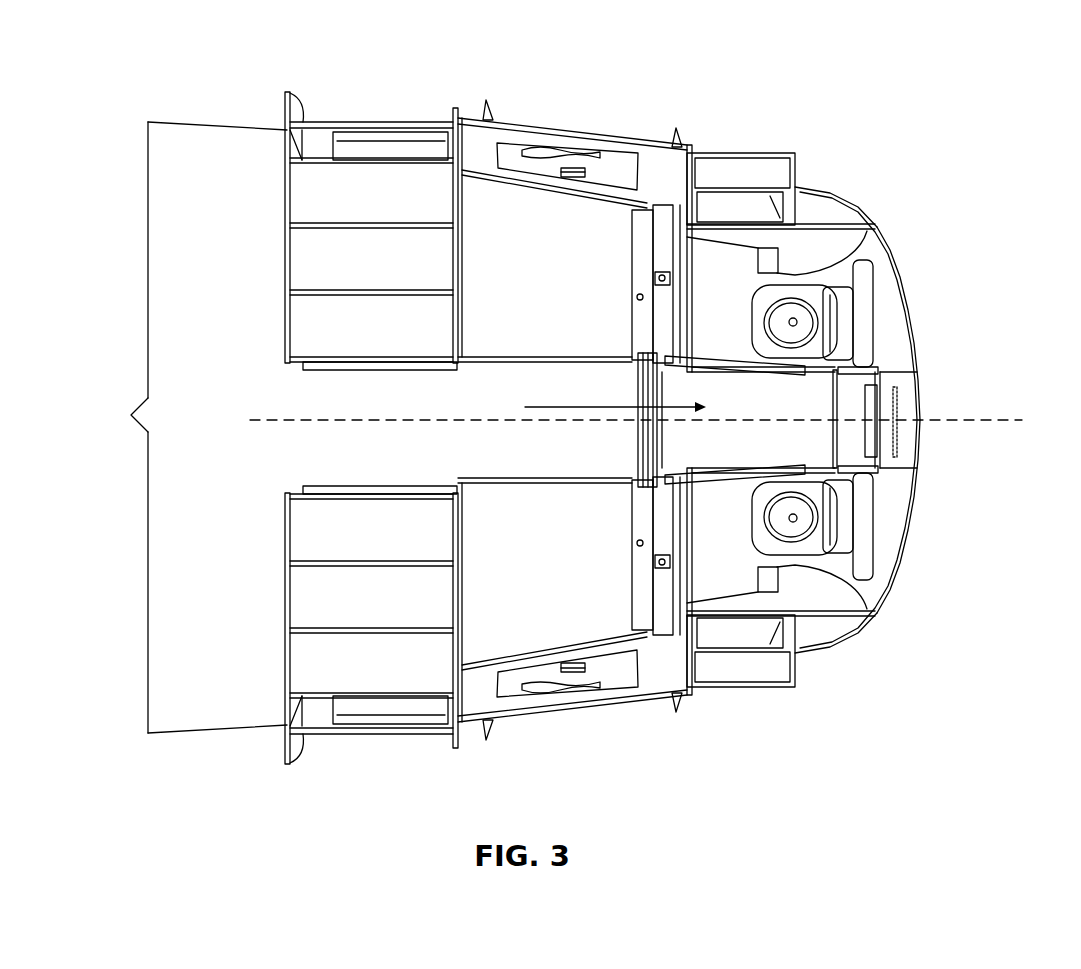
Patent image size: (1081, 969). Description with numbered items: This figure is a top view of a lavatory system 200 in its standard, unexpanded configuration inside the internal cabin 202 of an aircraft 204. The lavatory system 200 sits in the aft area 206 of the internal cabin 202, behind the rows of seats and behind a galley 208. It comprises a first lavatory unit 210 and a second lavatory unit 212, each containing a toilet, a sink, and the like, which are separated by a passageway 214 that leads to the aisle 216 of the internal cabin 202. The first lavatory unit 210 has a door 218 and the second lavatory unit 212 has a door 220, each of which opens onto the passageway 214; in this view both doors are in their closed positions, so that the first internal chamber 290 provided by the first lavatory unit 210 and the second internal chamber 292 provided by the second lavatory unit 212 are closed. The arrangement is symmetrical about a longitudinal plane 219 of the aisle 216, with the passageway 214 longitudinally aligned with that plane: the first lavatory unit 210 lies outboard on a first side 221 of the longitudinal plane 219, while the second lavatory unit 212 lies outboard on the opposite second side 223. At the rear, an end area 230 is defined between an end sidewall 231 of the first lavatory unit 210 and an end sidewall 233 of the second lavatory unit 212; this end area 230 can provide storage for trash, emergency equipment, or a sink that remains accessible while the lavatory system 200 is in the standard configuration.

The lavatory system 200 is at (908, 543).
The internal cabin 202 is at (237, 716).
The aircraft 204 is at (305, 103).
The aft area 206 is at (916, 301).
The galley 208 is at (472, 198).
The first lavatory unit 210 is at (816, 603).
The second lavatory unit 212 is at (815, 242).
The passageway 214 is at (628, 363).
The aisle 216 is at (269, 402).
The door 218 is at (730, 470).
The longitudinal plane 219 is at (1000, 428).
The door 220 is at (730, 363).
The first side 221 is at (900, 625).
The second side 223 is at (901, 229).
The end area 230 is at (921, 418).
The end sidewall 231 is at (847, 462).
The end sidewall 233 is at (847, 380).
The first internal chamber 290 is at (776, 655).
The second internal chamber 292 is at (782, 168).